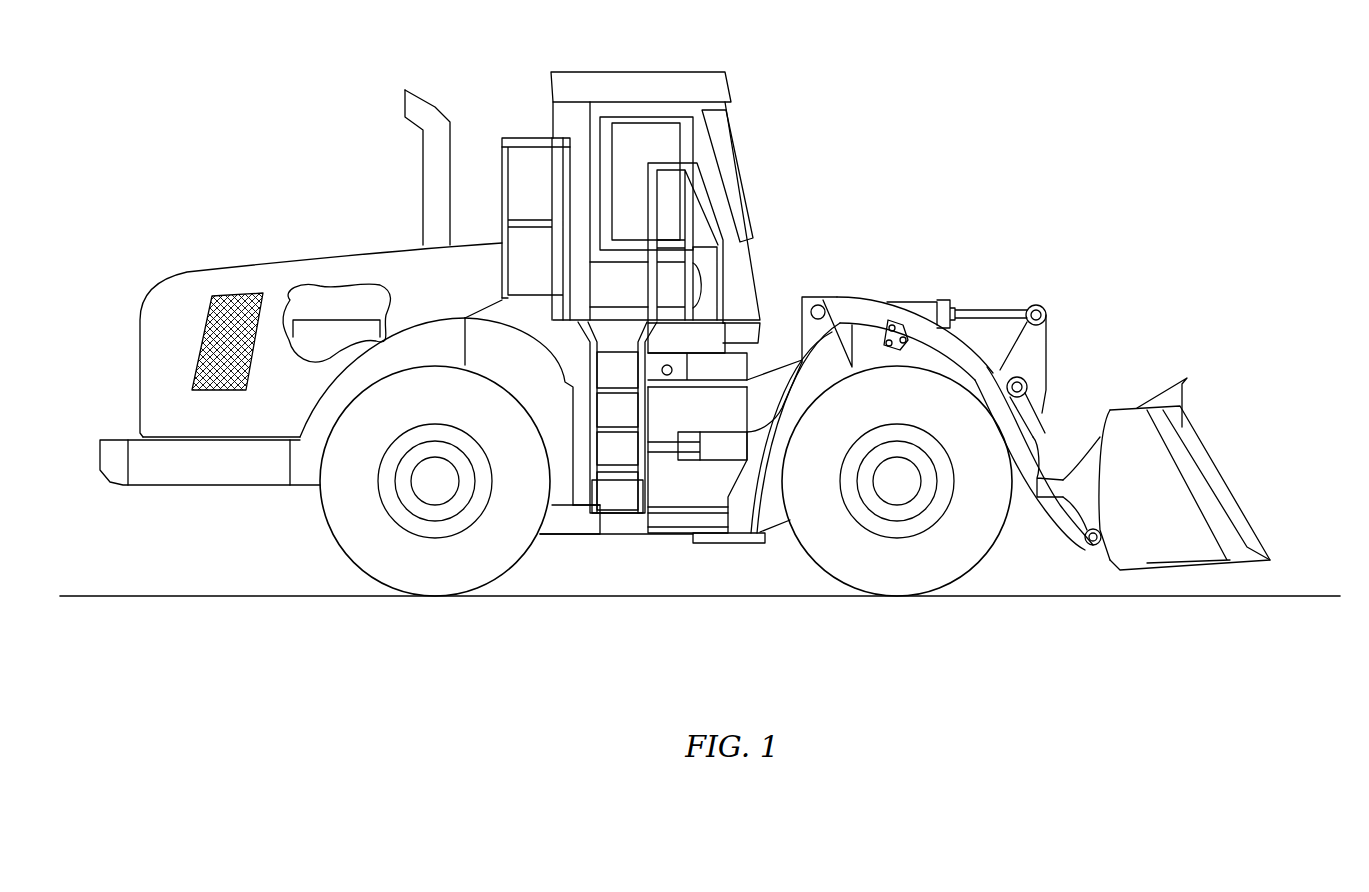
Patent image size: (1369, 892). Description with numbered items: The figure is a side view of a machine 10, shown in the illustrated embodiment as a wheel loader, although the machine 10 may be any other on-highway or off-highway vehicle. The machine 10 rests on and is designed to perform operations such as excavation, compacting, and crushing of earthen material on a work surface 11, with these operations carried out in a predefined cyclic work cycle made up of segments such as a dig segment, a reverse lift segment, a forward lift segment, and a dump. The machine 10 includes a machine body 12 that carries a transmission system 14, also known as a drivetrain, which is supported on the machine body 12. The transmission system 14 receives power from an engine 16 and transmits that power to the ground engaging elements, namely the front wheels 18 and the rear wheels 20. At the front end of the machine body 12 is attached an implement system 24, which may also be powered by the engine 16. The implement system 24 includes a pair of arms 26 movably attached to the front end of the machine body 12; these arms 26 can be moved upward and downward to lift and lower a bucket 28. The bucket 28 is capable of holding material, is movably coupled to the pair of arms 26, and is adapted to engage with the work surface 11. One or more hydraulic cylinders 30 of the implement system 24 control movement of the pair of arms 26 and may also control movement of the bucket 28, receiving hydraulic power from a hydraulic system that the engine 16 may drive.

The machine 10 is at (451, 307).
The work surface 11 is at (1310, 594).
The machine body 12 is at (568, 522).
The transmission system 14 is at (688, 483).
The engine 16 is at (325, 320).
The front wheels 18 is at (826, 553).
The rear wheels 20 is at (370, 553).
The implement system 24 is at (1047, 398).
The pair of arms 26 is at (1017, 487).
The bucket 28 is at (1185, 512).
The hydraulic cylinders 30 is at (920, 302).